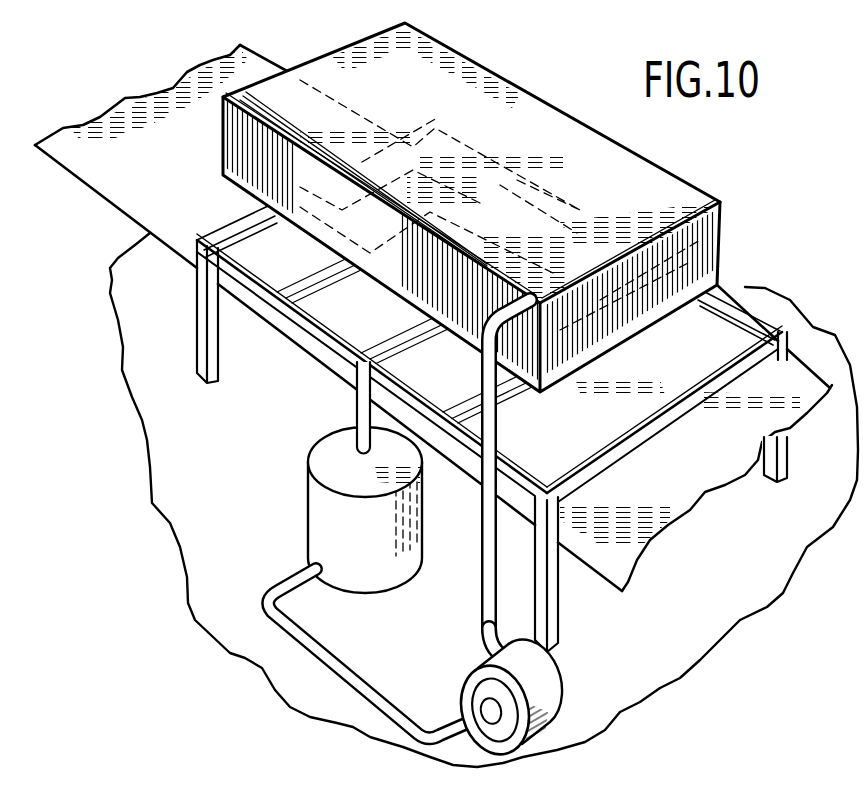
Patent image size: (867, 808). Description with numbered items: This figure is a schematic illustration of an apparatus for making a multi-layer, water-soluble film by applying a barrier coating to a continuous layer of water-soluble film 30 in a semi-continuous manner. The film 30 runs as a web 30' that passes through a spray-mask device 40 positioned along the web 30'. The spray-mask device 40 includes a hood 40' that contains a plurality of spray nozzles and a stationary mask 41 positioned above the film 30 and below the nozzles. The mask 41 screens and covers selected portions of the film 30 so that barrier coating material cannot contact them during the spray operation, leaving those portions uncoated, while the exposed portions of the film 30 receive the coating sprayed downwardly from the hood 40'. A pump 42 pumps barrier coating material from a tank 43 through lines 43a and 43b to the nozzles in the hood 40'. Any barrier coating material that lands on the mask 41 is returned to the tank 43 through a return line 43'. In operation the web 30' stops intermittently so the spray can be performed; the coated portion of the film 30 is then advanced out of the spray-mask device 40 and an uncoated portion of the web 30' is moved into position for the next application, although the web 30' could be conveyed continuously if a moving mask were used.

The water-soluble film 30 is at (446, 406).
The web 30' is at (535, 194).
The spray-mask device 40 is at (471, 197).
The hood 40' is at (470, 161).
The stationary mask 41 is at (748, 287).
The pump 42 is at (548, 703).
The tank 43 is at (324, 510).
The return line 43' is at (307, 408).
The line 43a is at (245, 657).
The line 43b is at (488, 558).